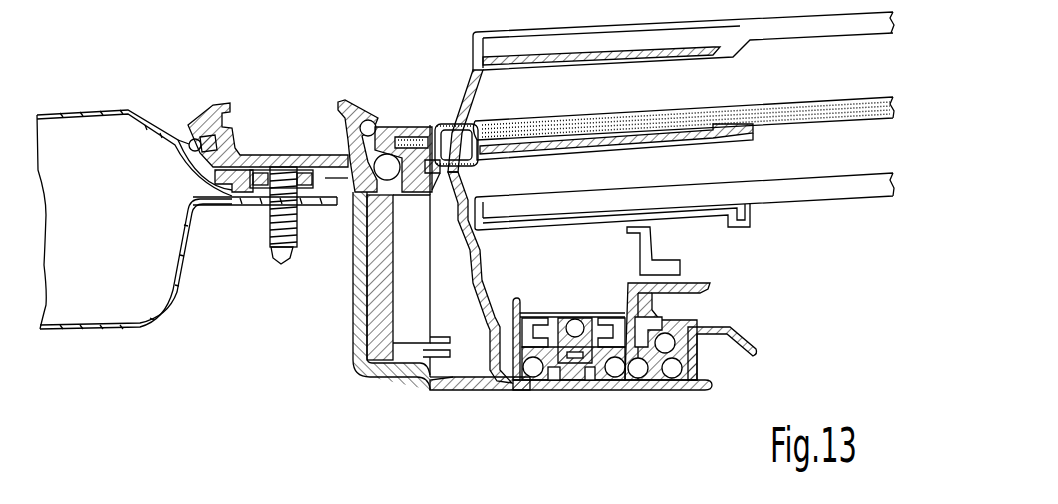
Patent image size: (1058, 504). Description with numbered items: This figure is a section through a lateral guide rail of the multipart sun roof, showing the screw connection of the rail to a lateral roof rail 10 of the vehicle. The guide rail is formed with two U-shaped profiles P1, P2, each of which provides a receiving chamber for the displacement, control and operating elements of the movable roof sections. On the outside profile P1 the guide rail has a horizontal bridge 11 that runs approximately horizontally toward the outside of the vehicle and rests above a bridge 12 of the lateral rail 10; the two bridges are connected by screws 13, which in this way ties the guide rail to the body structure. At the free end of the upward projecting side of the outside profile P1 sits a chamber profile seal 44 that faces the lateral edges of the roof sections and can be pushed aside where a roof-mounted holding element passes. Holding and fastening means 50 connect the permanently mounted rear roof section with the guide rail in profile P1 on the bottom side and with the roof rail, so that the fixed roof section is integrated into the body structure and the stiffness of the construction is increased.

The lateral rail 10 is at (127, 328).
The horizontal bridge 11 is at (330, 153).
The bridge 12 is at (322, 200).
The screws 13 is at (263, 230).
The chamber profile seal 44 is at (443, 124).
The holding and fastening means 50 is at (480, 272).
The outside profile P1 is at (443, 393).
The U-shaped profile P2 is at (613, 393).